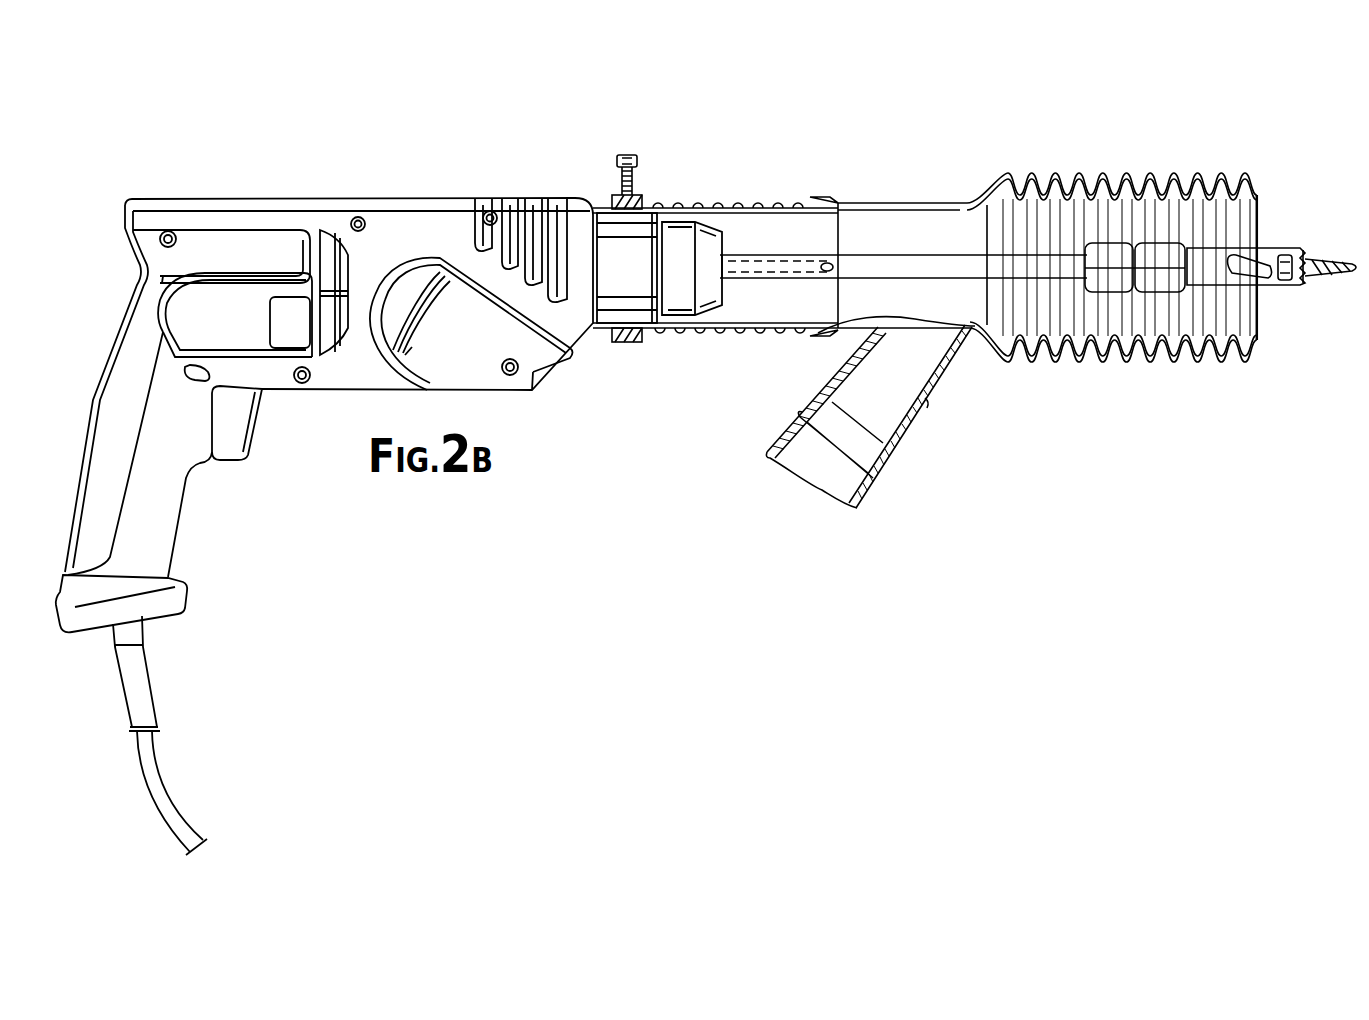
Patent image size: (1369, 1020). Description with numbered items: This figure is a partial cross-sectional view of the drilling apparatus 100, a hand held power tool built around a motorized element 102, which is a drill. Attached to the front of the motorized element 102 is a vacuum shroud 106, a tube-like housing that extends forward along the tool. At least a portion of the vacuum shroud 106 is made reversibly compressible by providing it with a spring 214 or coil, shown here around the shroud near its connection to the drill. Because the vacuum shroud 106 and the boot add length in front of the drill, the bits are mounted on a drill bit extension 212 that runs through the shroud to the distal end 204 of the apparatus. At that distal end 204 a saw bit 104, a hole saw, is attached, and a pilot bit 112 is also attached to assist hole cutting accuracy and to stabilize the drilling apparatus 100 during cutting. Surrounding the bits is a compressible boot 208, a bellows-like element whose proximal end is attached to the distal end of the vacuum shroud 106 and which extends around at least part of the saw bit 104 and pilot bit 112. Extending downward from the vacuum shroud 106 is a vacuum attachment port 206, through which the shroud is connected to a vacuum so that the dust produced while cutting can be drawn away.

The drilling apparatus 100 is at (857, 125).
The motorized element 102 is at (370, 197).
The saw bit 104 is at (1278, 247).
The vacuum shroud 106 is at (902, 213).
The pilot bit 112 is at (1347, 258).
The distal end 204 is at (1287, 302).
The vacuum attachment port 206 is at (908, 428).
The compressible boot 208 is at (1148, 173).
The drill bit extension 212 is at (953, 252).
The spring 214 is at (718, 203).